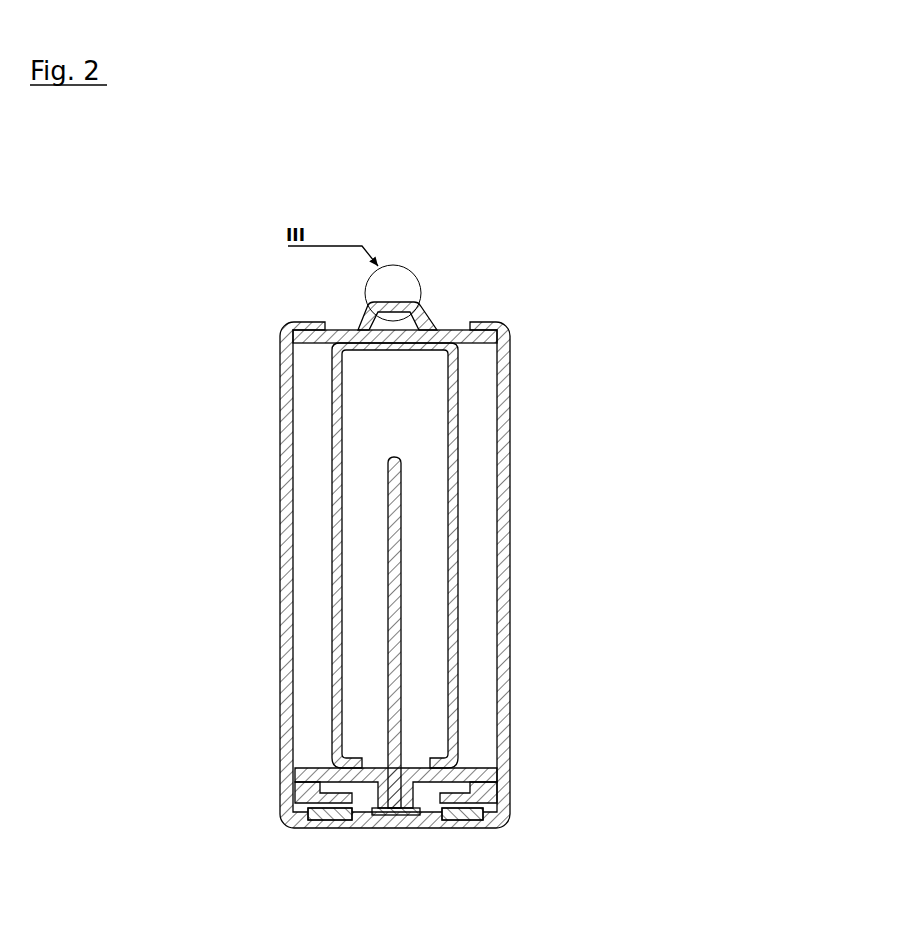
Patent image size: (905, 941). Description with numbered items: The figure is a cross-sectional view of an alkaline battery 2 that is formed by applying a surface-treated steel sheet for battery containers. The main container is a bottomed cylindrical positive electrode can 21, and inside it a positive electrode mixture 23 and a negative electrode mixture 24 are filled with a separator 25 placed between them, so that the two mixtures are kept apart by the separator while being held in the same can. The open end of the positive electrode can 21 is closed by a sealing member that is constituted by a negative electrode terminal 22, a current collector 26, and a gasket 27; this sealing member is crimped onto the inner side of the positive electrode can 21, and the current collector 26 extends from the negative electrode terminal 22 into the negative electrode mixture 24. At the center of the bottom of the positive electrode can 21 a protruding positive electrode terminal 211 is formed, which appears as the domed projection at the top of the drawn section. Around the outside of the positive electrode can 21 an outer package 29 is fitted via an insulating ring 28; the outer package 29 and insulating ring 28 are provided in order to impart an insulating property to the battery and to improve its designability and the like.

The alkaline battery 2 is at (492, 210).
The positive electrode can 21 is at (511, 372).
The positive electrode terminal 211 is at (427, 316).
The negative electrode terminal 22 is at (397, 827).
The positive electrode mixture 23 is at (315, 457).
The negative electrode mixture 24 is at (358, 697).
The separator 25 is at (332, 558).
The current collector 26 is at (403, 521).
The gasket 27 is at (470, 767).
The insulating ring 28 is at (303, 827).
The outer package 29 is at (280, 352).